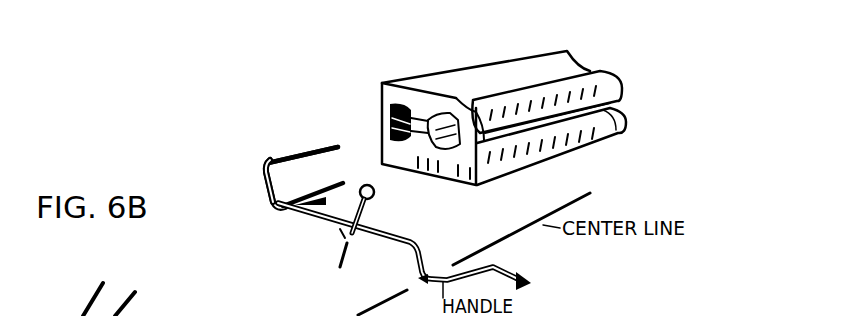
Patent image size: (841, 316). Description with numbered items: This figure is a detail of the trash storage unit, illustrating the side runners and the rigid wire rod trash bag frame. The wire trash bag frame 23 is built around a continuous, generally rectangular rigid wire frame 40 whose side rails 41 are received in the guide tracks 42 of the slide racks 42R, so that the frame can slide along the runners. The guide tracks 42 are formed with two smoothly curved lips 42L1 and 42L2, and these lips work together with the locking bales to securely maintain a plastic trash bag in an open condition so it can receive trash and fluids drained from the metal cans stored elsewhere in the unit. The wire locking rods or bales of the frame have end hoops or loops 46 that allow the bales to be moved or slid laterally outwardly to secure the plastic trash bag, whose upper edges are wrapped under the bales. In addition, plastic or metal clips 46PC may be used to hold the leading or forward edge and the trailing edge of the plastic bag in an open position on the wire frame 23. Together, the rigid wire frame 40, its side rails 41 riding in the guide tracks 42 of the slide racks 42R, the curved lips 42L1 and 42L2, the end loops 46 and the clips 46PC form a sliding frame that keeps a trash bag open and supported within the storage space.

The wire trash bag frame 23 is at (288, 141).
The rigid wire frame 40 is at (266, 186).
The side rails 41 is at (322, 147).
The end hoops or loops 46 is at (272, 206).
The clips 46PC is at (334, 240).
The guide tracks 42 is at (548, 99).
The slide racks 42R is at (408, 117).
The smoothly curved lip 42L1 is at (615, 82).
The smoothly curved lip 42L2 is at (623, 119).